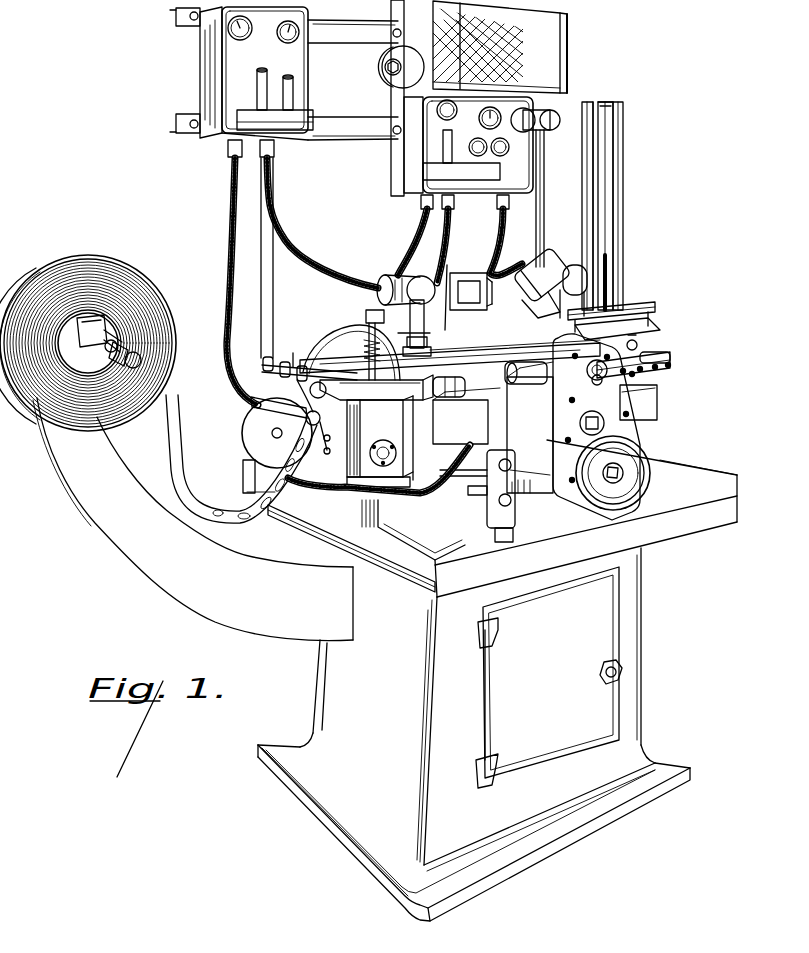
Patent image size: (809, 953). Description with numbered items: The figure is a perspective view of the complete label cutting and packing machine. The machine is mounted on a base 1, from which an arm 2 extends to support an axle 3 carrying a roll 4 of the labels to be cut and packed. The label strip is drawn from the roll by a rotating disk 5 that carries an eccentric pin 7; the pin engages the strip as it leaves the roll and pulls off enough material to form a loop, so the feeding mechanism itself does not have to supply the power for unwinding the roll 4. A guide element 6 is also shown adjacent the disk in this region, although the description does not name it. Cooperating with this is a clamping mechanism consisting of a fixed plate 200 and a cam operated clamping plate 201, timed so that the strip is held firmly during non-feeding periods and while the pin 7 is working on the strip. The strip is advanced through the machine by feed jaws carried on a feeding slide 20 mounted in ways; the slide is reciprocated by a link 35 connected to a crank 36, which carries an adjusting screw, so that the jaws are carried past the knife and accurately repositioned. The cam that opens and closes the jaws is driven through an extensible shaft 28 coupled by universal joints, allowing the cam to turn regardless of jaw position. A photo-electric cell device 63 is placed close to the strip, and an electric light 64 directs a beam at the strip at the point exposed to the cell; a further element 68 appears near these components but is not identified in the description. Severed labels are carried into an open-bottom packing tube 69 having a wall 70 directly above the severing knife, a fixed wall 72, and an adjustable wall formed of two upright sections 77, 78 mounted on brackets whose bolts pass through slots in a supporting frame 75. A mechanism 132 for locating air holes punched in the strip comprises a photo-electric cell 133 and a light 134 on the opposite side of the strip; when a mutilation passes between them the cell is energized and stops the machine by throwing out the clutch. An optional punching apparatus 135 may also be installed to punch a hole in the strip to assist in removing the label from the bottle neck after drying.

The base 1 is at (637, 592).
The arm 2 is at (86, 520).
The axle 3 is at (98, 362).
The roll 4 is at (117, 262).
The rotating disk 5 is at (247, 436).
The strip guide 6 is at (285, 482).
The eccentric pin 7 is at (253, 410).
The feeding slide 20 is at (658, 376).
The shaft 28 is at (536, 412).
The link 35 is at (640, 342).
The crank 36 is at (528, 372).
The photo-electric cell device 63 is at (571, 262).
The electric light 64 is at (512, 280).
The switch box 68 is at (469, 284).
The packing tube 69 is at (624, 180).
The wall 70 is at (594, 142).
The fixed wall 72 is at (583, 120).
The supporting frame 75 is at (652, 316).
The upright section 77 is at (610, 150).
The upright section 78 is at (618, 128).
The air hole locating mechanism 132 is at (389, 272).
The photo-electric cell 133 is at (423, 276).
The light 134 is at (445, 414).
The punching apparatus 135 is at (476, 262).
The fixed plate 200 is at (376, 451).
The cam operated clamping plate 201 is at (345, 348).